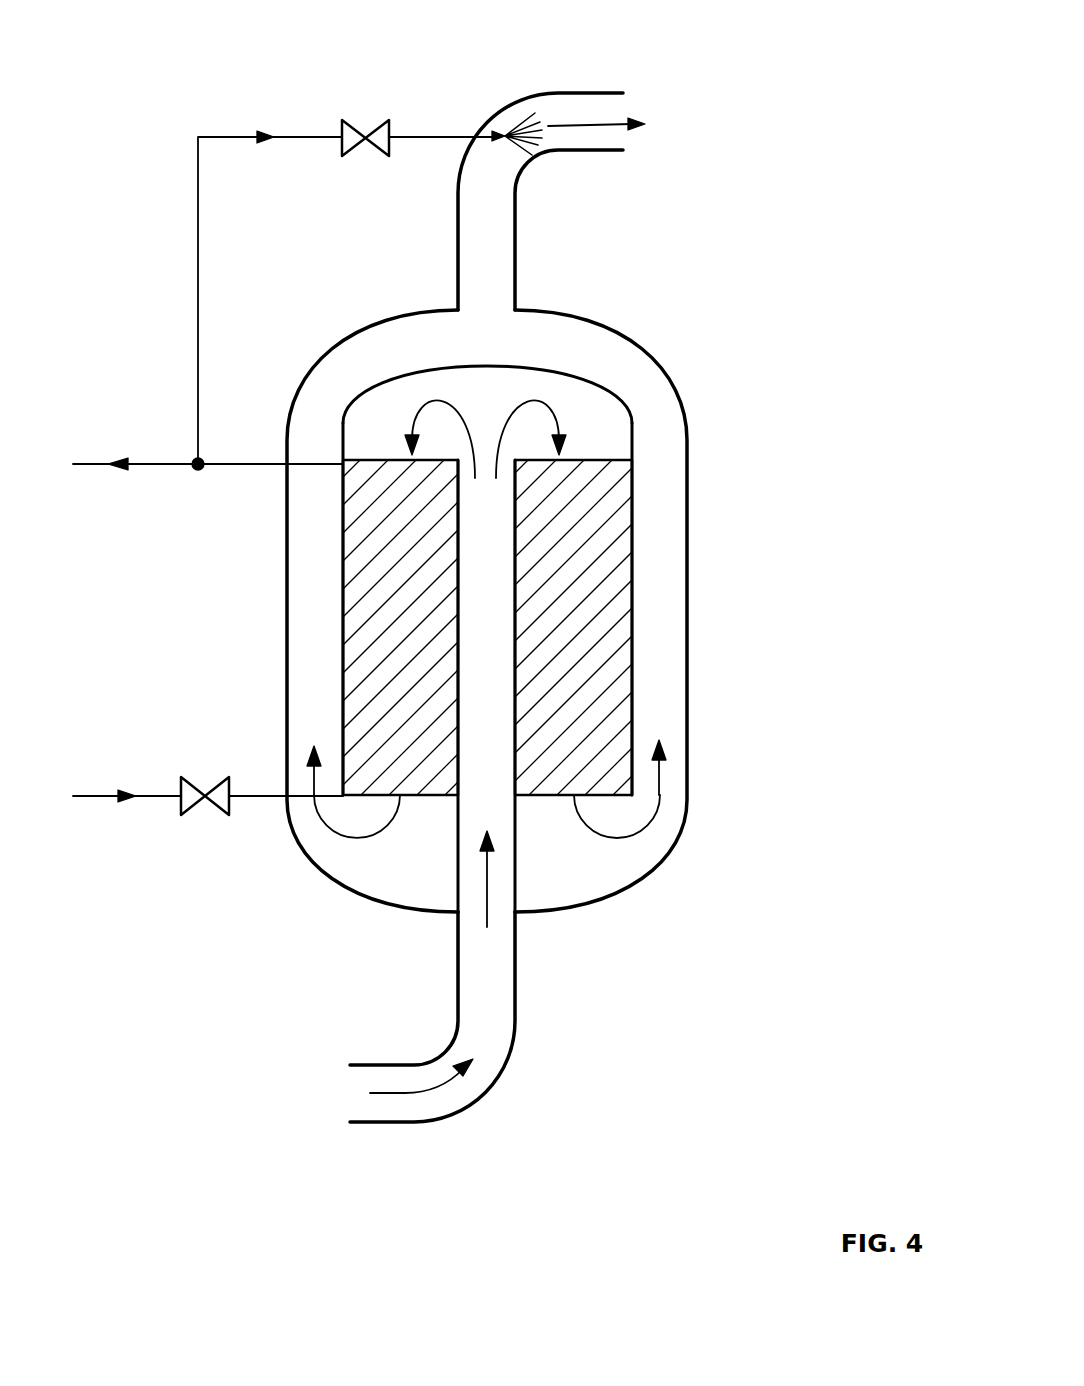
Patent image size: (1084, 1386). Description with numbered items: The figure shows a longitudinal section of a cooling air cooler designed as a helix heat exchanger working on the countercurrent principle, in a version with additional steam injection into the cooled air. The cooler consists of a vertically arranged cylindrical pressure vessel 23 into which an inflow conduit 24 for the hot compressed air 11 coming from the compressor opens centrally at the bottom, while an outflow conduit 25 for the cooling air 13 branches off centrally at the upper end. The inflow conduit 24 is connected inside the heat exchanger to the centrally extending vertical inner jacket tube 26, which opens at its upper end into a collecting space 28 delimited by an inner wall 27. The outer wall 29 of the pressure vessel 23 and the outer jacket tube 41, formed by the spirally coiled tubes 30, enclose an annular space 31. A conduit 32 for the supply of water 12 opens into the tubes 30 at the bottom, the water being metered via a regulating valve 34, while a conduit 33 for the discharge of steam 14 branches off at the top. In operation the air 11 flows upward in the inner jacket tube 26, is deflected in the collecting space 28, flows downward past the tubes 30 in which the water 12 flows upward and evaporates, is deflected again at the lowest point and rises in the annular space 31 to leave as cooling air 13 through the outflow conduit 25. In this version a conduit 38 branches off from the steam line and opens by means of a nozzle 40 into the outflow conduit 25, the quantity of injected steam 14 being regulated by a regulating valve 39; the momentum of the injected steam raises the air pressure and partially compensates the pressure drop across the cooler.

The air 11 is at (387, 1085).
The water 12 is at (127, 801).
The cooling air 13 is at (614, 123).
The steam 14 is at (262, 128).
The pressure vessel 23 is at (662, 855).
The inflow conduit 24 is at (447, 1113).
The outflow conduit 25 is at (522, 107).
The inner jacket tube 26 is at (488, 572).
The inner wall 27 is at (557, 370).
The collecting space 28 is at (592, 428).
The outer wall 29 is at (690, 672).
The spirally coiled tubes 30 is at (570, 508).
The annular space 31 is at (660, 698).
The conduit 32 is at (263, 801).
The conduit 33 is at (242, 466).
The regulating valve 34 is at (204, 803).
The conduit 38 is at (198, 258).
The regulating valve 39 is at (365, 128).
The spray nozzle 40 is at (514, 128).
The outer jacket tube 41 is at (637, 612).